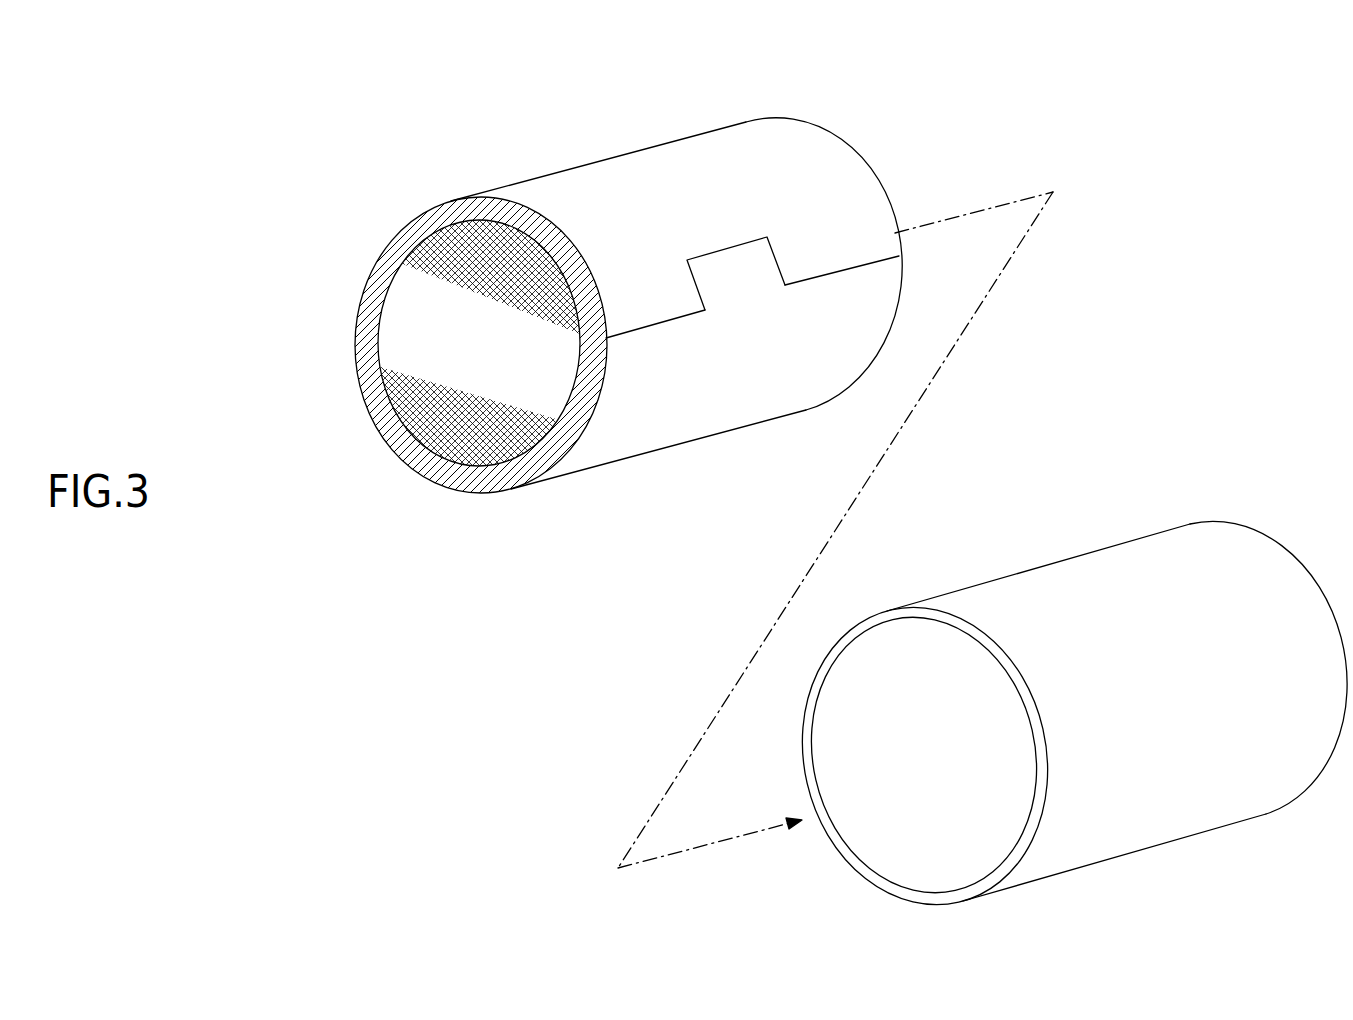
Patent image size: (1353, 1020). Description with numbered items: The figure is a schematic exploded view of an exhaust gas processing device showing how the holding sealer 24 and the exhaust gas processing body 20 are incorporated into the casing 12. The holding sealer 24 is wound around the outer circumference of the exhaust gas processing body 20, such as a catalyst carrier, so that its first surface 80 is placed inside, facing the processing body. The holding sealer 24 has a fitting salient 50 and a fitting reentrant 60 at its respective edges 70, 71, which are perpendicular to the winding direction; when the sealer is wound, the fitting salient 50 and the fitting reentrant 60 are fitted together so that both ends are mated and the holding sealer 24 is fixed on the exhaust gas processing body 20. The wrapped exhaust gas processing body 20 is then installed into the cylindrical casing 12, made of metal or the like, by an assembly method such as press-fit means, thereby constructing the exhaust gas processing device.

The cylindrical casing 12 is at (1162, 827).
The exhaust gas processing body 20 is at (600, 318).
The holding sealer 24 is at (707, 135).
The fitting salient 50 is at (736, 377).
The fitting reentrant 60 is at (742, 275).
The edge 70 is at (804, 234).
The edge 71 is at (840, 267).
The first surface 80 is at (432, 447).